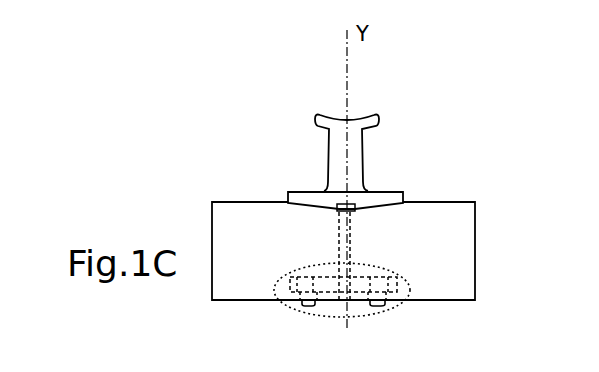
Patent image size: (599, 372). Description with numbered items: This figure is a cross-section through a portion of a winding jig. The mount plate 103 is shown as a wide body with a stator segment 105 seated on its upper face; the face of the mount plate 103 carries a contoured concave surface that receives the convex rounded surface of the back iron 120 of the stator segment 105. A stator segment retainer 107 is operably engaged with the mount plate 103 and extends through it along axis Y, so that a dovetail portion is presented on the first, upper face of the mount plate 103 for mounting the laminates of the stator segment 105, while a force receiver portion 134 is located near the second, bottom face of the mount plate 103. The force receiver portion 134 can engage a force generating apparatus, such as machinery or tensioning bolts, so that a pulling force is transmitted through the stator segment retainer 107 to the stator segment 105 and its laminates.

The mount plate 103 is at (233, 212).
The stator segment 105 is at (336, 118).
The back iron 120 is at (303, 191).
The stator segment retainer 107 is at (357, 252).
The force receiver portion 134 is at (412, 287).